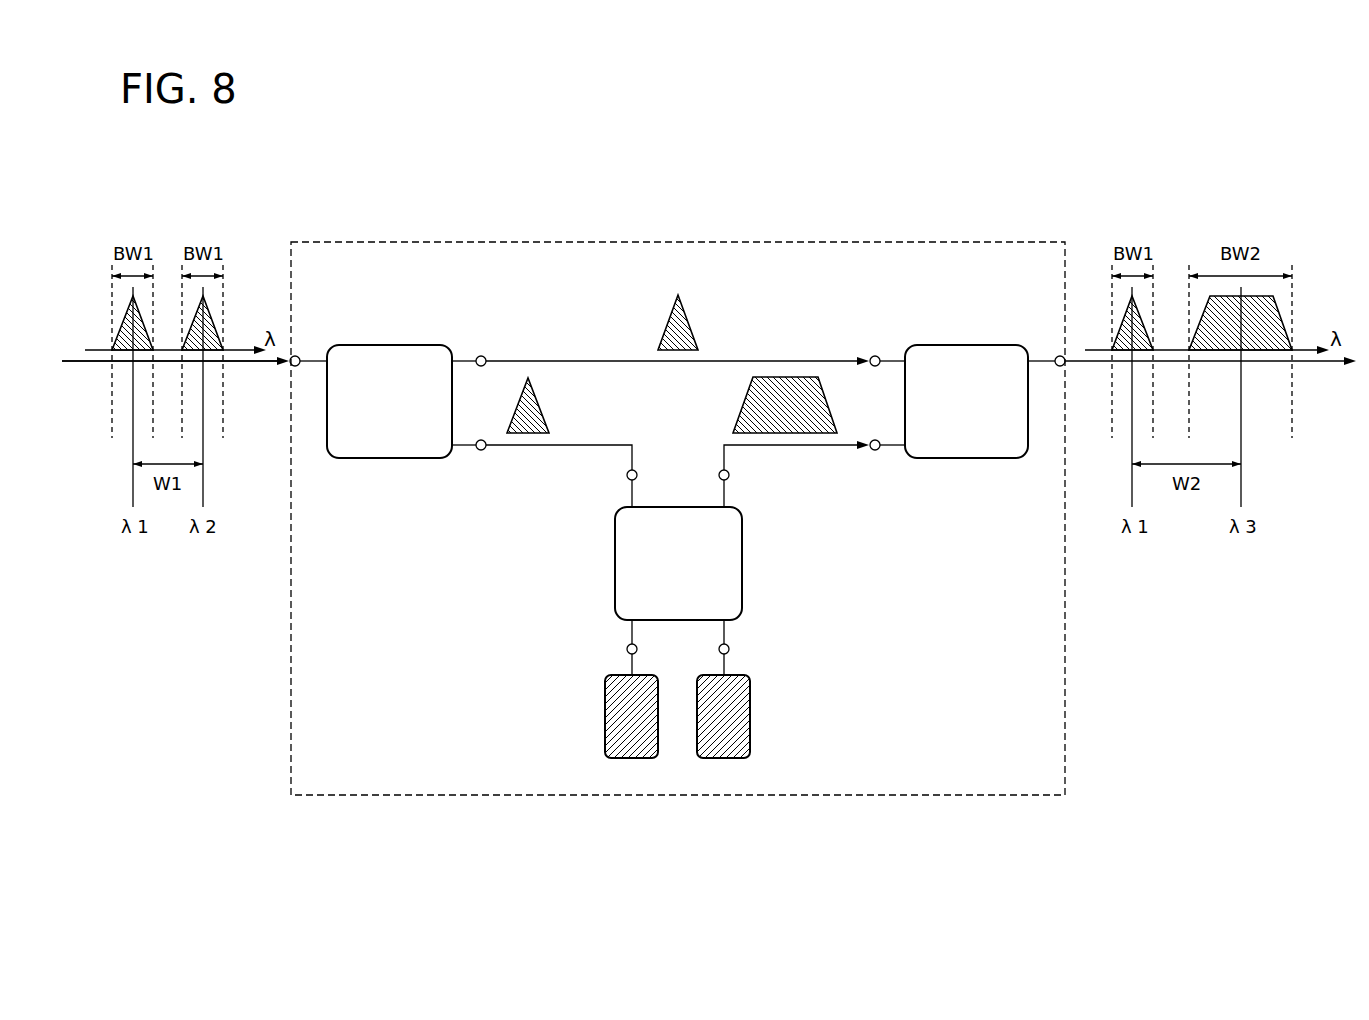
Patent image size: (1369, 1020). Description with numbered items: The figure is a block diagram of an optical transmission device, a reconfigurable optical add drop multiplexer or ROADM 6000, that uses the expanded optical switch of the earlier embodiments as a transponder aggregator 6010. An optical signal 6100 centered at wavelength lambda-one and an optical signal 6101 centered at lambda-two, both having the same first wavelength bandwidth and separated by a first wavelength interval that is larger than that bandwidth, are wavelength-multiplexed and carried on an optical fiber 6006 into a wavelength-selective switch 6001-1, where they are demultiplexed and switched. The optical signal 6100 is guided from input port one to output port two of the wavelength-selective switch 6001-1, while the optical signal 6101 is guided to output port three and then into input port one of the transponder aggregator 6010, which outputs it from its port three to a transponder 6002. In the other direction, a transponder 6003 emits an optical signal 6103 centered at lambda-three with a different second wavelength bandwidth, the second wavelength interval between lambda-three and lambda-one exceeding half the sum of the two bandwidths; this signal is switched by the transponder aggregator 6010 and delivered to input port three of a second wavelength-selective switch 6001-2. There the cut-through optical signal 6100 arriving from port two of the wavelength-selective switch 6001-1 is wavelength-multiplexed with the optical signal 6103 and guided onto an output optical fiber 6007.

The ROADM 6000 is at (928, 242).
The wavelength-selective switch 6001-1 is at (397, 345).
The wavelength-selective switch 6001-2 is at (970, 345).
The transponder 6002 is at (605, 698).
The transponder 6003 is at (750, 693).
The optical fiber 6006 is at (252, 365).
The optical fiber 6007 is at (1322, 365).
The transponder aggregator 6010 is at (742, 558).
The optical signal 6100 is at (113, 333).
The optical signal 6101 is at (184, 297).
The optical signal 6103 is at (742, 407).